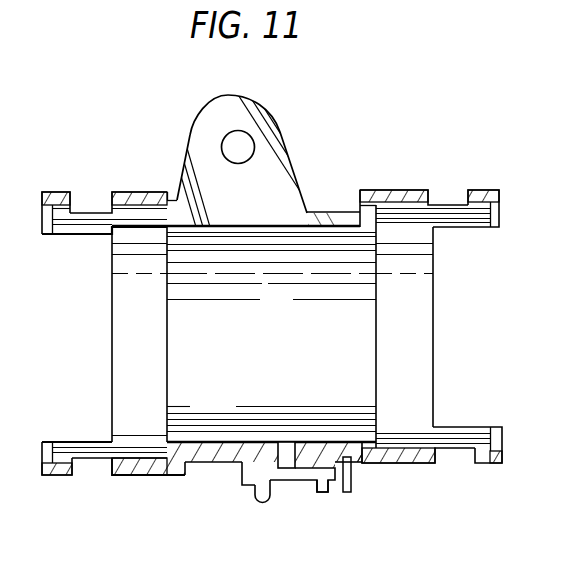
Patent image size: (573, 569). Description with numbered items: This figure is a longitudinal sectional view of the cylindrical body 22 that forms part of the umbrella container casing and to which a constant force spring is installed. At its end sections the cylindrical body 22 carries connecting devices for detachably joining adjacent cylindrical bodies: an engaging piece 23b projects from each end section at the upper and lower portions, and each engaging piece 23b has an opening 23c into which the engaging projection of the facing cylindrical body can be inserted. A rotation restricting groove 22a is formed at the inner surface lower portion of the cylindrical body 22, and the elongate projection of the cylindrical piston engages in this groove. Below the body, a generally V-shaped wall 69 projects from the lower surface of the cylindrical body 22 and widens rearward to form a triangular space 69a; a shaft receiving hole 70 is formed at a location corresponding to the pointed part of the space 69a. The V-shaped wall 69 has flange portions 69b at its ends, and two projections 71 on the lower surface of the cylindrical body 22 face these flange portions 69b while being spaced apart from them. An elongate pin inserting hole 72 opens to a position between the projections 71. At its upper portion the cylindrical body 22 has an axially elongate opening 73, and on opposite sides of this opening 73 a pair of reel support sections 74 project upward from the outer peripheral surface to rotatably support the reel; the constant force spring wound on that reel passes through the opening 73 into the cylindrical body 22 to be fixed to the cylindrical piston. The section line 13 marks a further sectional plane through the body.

The section line 13- 13 is at (228, 60).
The cylindrical body 22 is at (393, 190).
The rotation restricting groove 22a is at (212, 441).
The engaging piece 23b is at (53, 191).
The opening 23c is at (92, 212).
The V-shaped wall 69 is at (280, 482).
The triangular space 69a is at (302, 466).
The flange portion 69b is at (322, 494).
The shaft receiving hole 70 is at (273, 455).
The projection 71 is at (348, 494).
The elongate pin inserting hole 72 is at (350, 441).
The axially elongate opening 73 is at (324, 222).
The reel support section 74 is at (287, 139).